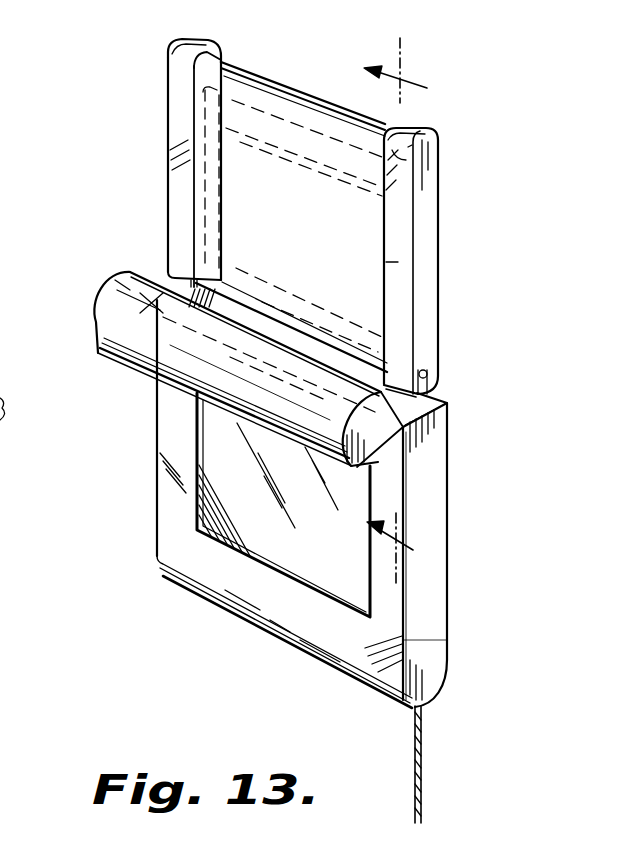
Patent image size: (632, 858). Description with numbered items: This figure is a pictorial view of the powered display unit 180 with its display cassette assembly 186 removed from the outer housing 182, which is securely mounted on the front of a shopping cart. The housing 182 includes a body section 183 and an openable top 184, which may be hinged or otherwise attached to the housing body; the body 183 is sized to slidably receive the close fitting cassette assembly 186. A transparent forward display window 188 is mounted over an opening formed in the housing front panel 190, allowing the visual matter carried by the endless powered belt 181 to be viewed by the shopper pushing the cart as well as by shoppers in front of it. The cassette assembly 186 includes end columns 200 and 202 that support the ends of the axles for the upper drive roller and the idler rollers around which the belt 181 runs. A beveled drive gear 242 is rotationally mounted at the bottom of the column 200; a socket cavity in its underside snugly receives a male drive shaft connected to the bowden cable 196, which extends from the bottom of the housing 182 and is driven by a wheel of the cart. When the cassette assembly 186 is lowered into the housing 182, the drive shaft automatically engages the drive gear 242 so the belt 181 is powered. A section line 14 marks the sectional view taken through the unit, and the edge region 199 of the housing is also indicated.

The powered display unit 180 is at (118, 183).
The endless powered belt 181 is at (400, 263).
The outer housing 182 is at (452, 522).
The body section 183 is at (383, 613).
The openable top 184 is at (110, 297).
The display cassette assembly 186 is at (140, 147).
The transparent forward display window 188 is at (220, 507).
The housing front panel 190 is at (173, 437).
The bowden cable 196 is at (423, 753).
The top face of side bar 199 is at (423, 397).
The end column 200 is at (430, 187).
The end column 202 is at (173, 77).
The beveled drive gear 242 is at (425, 370).
The section line for FIG. 14 is at (404, 314).